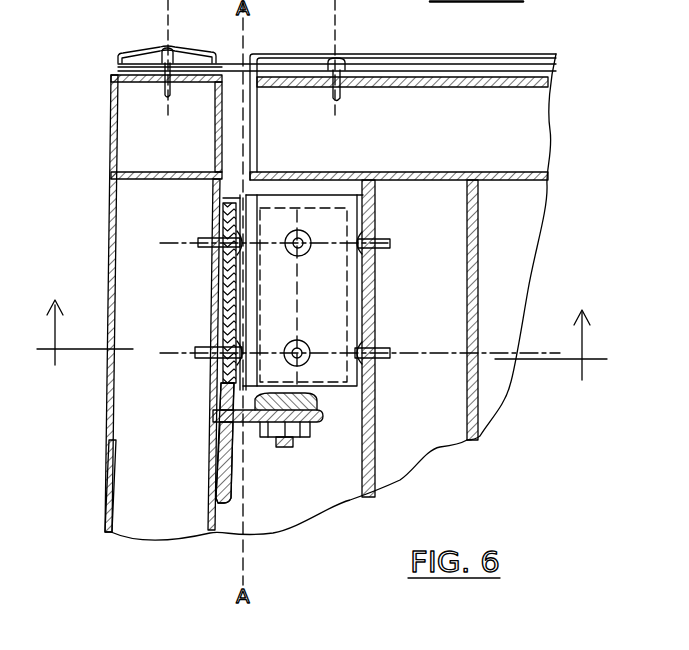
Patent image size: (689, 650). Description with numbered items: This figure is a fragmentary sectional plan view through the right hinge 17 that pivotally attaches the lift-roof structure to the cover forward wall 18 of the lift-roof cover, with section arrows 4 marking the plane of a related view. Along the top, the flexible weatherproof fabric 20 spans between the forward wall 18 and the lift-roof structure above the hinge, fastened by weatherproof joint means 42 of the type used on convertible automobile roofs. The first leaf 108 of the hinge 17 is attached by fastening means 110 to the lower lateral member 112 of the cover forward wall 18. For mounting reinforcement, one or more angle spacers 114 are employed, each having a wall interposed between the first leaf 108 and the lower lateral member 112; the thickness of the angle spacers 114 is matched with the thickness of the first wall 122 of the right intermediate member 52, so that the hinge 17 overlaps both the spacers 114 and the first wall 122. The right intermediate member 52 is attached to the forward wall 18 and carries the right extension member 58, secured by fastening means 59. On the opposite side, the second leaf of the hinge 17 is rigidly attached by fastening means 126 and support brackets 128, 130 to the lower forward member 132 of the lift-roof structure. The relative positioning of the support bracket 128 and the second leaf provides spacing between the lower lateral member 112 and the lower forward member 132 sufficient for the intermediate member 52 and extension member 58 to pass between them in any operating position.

The right hinge 17 is at (246, 418).
The cover forward wall 18 is at (108, 482).
The flexible weatherproof fabric 20 is at (230, 62).
The weatherproof joint means 42 is at (128, 54).
The right intermediate member 52 is at (213, 400).
The right extension member 58 is at (227, 492).
The fastening means 59 is at (305, 436).
The first leaf 108 is at (250, 200).
The fastening means 110 is at (200, 239).
The lower lateral member 112 is at (110, 410).
The angle spacer 114 is at (217, 272).
The first wall 122 is at (213, 373).
The fastening means 126 is at (312, 246).
The support bracket 128 is at (336, 200).
The support bracket 130 is at (372, 228).
The lower forward member 132 is at (478, 247).
The section arrows 4 is at (318, 340).